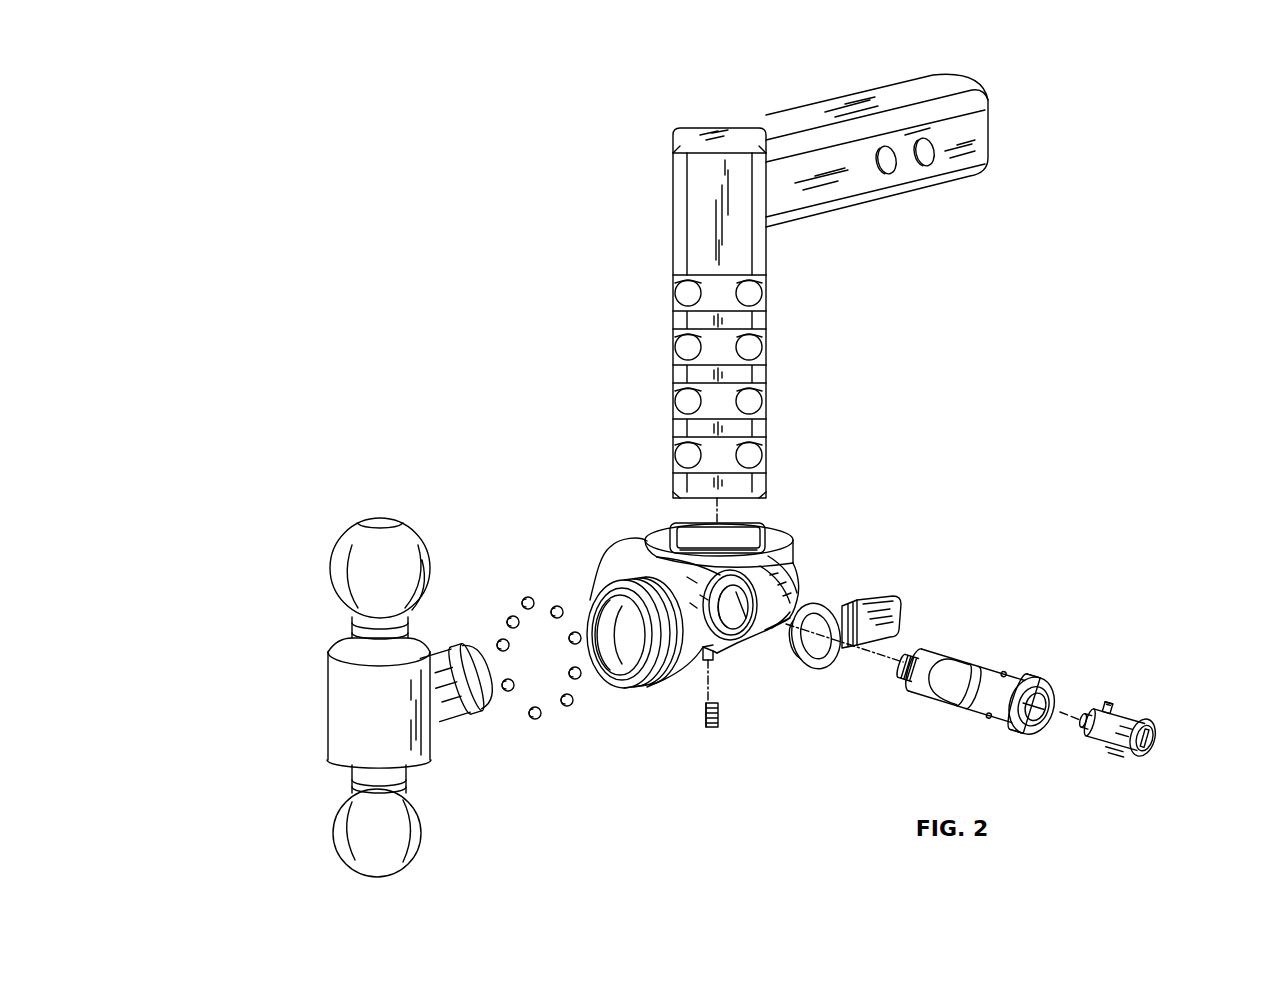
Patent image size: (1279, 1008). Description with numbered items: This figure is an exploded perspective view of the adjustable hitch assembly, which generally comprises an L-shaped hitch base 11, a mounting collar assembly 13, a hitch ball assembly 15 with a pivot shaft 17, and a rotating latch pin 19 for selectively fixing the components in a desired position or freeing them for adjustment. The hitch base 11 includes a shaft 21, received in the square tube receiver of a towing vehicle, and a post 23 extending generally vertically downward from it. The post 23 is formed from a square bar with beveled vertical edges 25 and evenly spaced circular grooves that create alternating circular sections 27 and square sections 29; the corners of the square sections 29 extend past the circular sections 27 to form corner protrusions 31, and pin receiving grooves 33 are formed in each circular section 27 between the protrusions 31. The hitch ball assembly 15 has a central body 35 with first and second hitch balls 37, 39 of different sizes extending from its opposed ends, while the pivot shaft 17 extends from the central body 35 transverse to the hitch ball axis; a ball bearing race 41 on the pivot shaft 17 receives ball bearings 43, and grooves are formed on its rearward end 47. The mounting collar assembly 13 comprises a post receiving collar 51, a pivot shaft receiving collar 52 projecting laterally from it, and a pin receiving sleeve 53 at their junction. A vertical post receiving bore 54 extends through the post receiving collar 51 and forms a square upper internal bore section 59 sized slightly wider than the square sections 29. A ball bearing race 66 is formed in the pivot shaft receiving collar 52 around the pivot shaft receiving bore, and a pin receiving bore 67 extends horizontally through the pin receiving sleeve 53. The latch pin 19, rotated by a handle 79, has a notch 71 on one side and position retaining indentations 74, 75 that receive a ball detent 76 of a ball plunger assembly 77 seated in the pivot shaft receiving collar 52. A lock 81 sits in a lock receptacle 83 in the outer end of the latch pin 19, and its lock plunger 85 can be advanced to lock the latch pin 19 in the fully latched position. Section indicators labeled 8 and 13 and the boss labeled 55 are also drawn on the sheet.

The hitch base 11 is at (770, 124).
The shaft 21 is at (950, 90).
The post 23 is at (695, 180).
The beveled vertical edges 25 is at (680, 208).
The circular sections 27 is at (760, 452).
The square sections 29 is at (745, 432).
The corner protrusions 31 is at (680, 378).
The pin receiving grooves 33 is at (682, 347).
The mounting collar assembly 13 is at (800, 575).
The section line 8- 8 is at (488, 672).
The post receiving collar 51 is at (793, 541).
The pivot shaft receiving collar 52 is at (668, 690).
The pin receiving sleeve 53 is at (612, 562).
The post receiving bore 54 is at (745, 535).
The upper internal bore section 59 is at (678, 538).
The ball bearing race 66 is at (615, 675).
The pin receiving bore 67 is at (733, 620).
The ball detent 76 is at (720, 712).
The ball plunger assembly 77 is at (713, 730).
The first hitch ball 37 is at (340, 558).
The second hitch ball 39 is at (410, 828).
The central body 35 is at (330, 742).
The hitch ball assembly 15 is at (328, 715).
The pivot shaft 17 is at (450, 705).
The ball bearing race 41 is at (462, 650).
The rearward end 47 is at (480, 652).
The ball bearings 43 is at (566, 716).
The ball mount bore boss 55 is at (634, 672).
The handle 79 is at (870, 605).
The notch 71 is at (950, 672).
The second position retaining indentation 74 is at (1005, 675).
The third position retaining indentation 75 is at (990, 718).
The rotating latch pin 19 is at (1016, 685).
The lock receptacle 83 is at (1042, 700).
The lock 81 is at (1147, 750).
The lock plunger 85 is at (1112, 703).